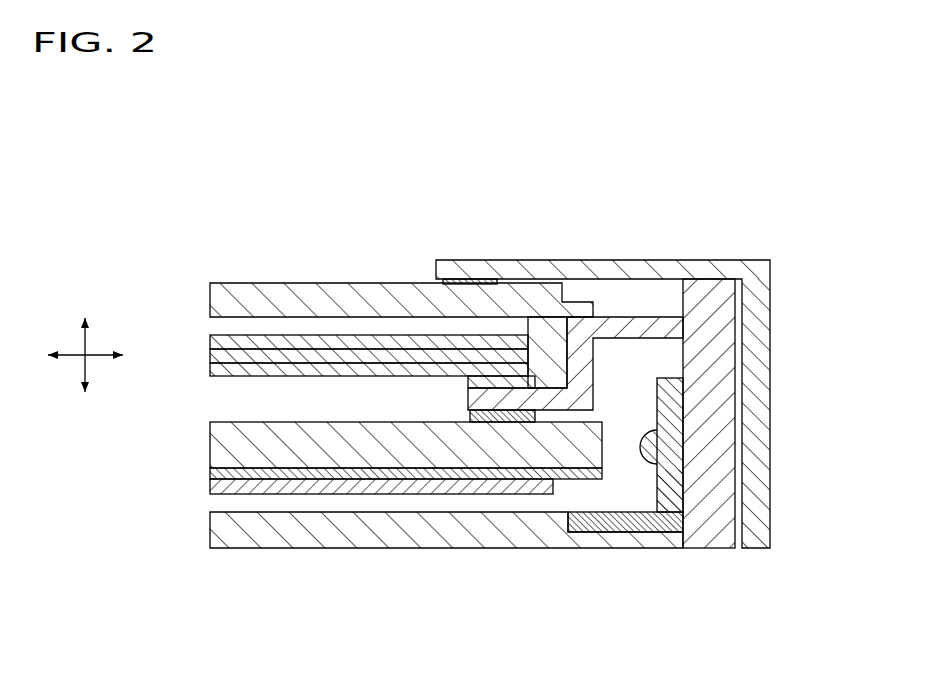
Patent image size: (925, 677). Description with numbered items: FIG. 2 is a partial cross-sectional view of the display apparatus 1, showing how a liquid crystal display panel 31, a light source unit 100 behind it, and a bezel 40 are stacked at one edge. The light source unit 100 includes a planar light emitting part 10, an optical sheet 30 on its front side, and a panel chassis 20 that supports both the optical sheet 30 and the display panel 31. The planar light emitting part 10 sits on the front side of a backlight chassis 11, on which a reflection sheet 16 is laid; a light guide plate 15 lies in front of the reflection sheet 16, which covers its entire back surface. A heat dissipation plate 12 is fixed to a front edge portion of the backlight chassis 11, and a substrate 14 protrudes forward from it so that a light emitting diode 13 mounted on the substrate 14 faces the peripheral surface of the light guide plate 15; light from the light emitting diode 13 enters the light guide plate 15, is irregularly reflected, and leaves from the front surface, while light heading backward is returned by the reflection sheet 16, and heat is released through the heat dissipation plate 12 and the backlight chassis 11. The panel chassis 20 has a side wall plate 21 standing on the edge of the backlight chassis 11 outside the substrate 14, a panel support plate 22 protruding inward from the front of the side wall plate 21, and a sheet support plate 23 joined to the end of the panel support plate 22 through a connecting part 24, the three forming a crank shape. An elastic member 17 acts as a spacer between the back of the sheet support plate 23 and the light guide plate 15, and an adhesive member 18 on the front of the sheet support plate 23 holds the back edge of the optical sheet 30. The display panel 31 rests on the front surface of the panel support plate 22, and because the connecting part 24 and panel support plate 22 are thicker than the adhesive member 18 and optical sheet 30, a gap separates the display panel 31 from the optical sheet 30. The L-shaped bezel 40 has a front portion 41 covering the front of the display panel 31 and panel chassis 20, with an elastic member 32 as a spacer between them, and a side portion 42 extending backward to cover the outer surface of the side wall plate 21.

The display apparatus 1 is at (593, 185).
The planar light emitting part 10 is at (197, 557).
The backlight chassis 11 is at (265, 538).
The heat dissipation plate 12 is at (643, 525).
The light emitting diode 13 is at (645, 435).
The substrate 14 is at (662, 488).
The light guide plate 15 is at (412, 452).
The reflection sheet 16 is at (343, 475).
The elastic member 17 is at (509, 412).
The adhesive member 18 is at (543, 383).
The panel chassis 20 is at (718, 554).
The side wall plate 21 is at (718, 463).
The panel support plate 22 is at (622, 327).
The sheet support plate 23 is at (547, 393).
The connecting part 24 is at (585, 352).
The optical sheet 30 is at (207, 330).
The display panel 31 is at (301, 292).
The elastic member 32 is at (472, 280).
The bezel 40 is at (779, 319).
The front portion 41 is at (648, 270).
The side portion 42 is at (758, 415).
The light source unit 100 is at (196, 405).